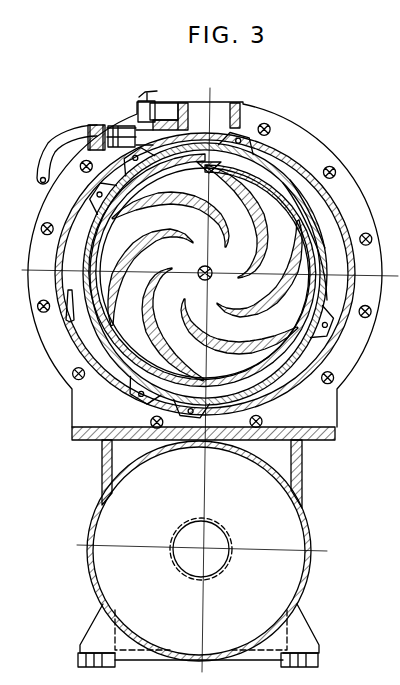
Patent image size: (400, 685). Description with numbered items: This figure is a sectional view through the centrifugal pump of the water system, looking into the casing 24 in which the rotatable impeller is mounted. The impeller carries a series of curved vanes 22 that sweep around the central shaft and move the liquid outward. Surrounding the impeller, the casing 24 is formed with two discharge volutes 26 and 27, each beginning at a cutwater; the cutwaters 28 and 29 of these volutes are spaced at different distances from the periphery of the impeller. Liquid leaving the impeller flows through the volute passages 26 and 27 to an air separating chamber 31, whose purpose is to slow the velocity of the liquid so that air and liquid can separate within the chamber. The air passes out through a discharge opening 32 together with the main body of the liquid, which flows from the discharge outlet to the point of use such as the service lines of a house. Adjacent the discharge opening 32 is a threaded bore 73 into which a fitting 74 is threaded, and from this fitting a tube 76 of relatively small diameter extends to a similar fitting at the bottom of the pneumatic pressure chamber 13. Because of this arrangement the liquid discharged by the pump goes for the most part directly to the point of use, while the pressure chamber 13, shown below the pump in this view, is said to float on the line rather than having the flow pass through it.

The pneumatic pressure chamber 13 is at (198, 553).
The curved vanes 22 is at (287, 287).
The casing 24 is at (310, 197).
The discharge volute 26 is at (88, 317).
The discharge volute 27 is at (293, 188).
The cutwater 28 is at (88, 303).
The cutwater 29 is at (300, 213).
The air separating chamber 31 is at (320, 348).
The discharge opening 32 is at (222, 103).
The threaded bore 73 is at (130, 127).
The fitting 74 is at (107, 127).
The tube 76 is at (45, 143).